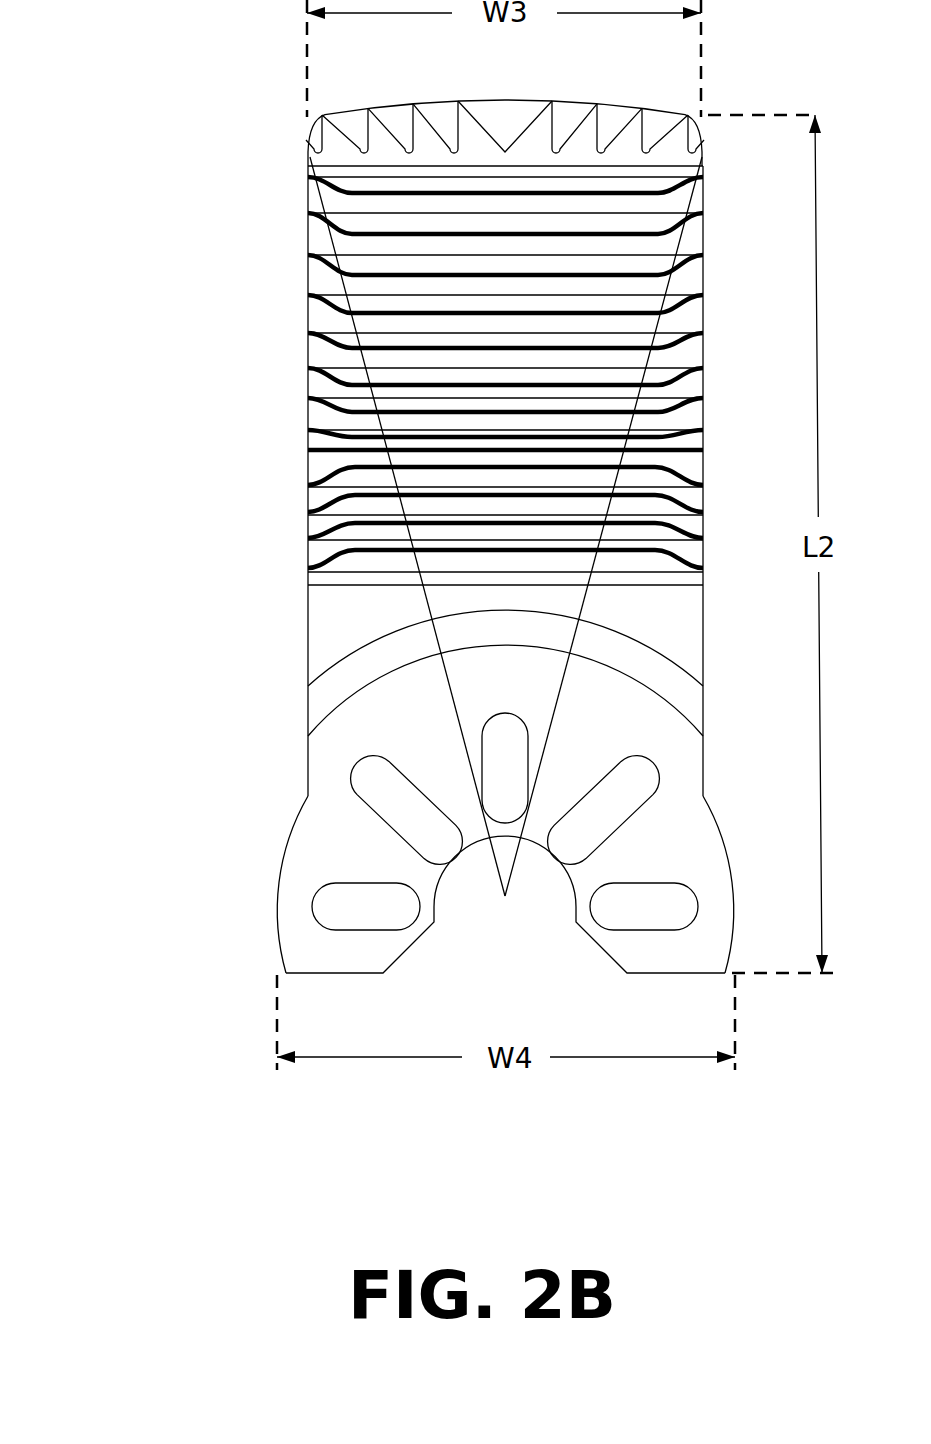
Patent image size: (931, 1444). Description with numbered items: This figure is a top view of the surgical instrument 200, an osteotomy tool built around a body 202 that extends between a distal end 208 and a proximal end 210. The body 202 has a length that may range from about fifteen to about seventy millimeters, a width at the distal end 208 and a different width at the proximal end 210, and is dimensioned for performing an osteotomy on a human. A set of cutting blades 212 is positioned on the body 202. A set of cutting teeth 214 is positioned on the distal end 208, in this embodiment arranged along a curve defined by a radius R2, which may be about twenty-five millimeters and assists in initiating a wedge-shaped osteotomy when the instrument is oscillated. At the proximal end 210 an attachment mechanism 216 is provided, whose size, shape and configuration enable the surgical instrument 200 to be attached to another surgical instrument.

The surgical instrument 200 is at (110, 343).
The body 202 is at (308, 380).
The distal end 208 is at (240, 157).
The proximal end 210 is at (268, 657).
The set of cutting blades 212 is at (395, 343).
The set of cutting teeth 214 is at (320, 140).
The attachment mechanism 216 is at (320, 853).
The radius R2 is at (318, 210).